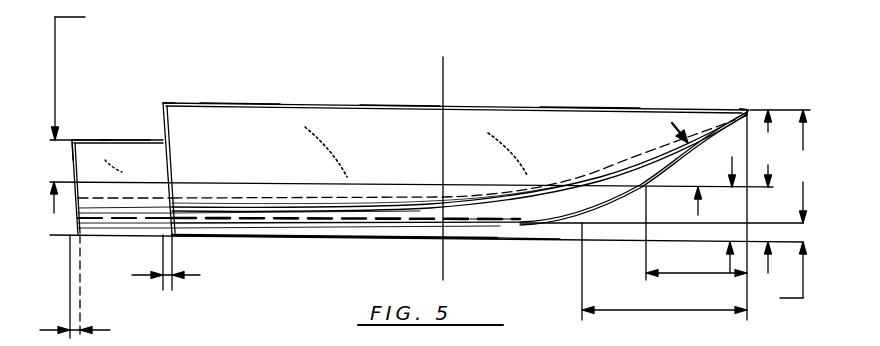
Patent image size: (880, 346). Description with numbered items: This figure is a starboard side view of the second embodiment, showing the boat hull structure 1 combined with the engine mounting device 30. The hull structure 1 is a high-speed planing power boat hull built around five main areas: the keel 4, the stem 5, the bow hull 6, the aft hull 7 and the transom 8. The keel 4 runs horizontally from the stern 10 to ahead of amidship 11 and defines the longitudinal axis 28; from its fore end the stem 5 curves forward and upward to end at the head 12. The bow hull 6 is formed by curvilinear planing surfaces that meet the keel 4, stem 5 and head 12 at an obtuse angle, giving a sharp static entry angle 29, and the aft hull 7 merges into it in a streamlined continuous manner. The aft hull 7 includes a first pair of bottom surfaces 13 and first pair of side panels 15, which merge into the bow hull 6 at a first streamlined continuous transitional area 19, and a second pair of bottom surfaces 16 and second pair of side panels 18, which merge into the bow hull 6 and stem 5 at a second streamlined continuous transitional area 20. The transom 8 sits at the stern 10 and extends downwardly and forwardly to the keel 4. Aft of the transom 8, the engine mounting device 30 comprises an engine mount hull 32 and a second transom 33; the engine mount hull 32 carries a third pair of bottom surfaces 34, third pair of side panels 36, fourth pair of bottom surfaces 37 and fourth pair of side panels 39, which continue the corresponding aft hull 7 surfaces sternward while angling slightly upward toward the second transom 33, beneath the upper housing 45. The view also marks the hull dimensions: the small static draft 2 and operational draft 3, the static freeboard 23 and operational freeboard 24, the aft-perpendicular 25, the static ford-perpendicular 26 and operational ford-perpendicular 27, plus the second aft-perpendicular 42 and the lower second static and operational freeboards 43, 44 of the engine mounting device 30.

The boat hull structure 1 is at (323, 286).
The static draft 2 is at (768, 205).
The operational draft 3 is at (767, 277).
The keel 4 is at (402, 238).
The stem 5 is at (627, 198).
The bow hull 6 is at (600, 153).
The aft hull 7 is at (247, 160).
The transom 8 is at (167, 187).
The stern 10 is at (158, 107).
The amidship 11 is at (443, 270).
The head 12 is at (748, 110).
The first pair of bottom surfaces 13 is at (252, 227).
The first pair of side panels 15 is at (343, 222).
The second pair of bottom surfaces 16 is at (300, 212).
The second pair of side panels 18 is at (413, 160).
The first streamlined continuous transitional area 19 is at (505, 218).
The second streamlined continuous transitional area 20 is at (668, 152).
The static freeboard 23 is at (780, 148).
The operational freeboard 24 is at (799, 166).
The aft-perpendicular 25 is at (178, 262).
The static ford-perpendicular 26 is at (696, 237).
The operational ford-perpendicular 27 is at (664, 217).
The longitudinal axis 28 is at (537, 240).
The sharp static entry angle 29 is at (459, 161).
The engine mounting device 30 is at (131, 88).
The engine mount hull 32 is at (74, 212).
The second transom 33 is at (74, 123).
The third pair of bottom surfaces 34 is at (129, 218).
The third pair of side panels 36 is at (113, 213).
The fourth pair of bottom surfaces 37 is at (103, 207).
The fourth pair of side panels 39 is at (143, 171).
The second aft-perpendicular 42 is at (90, 290).
The second static freeboard 43 is at (81, 73).
The second operational freeboard 44 is at (719, 187).
The upper housing 45 is at (127, 140).